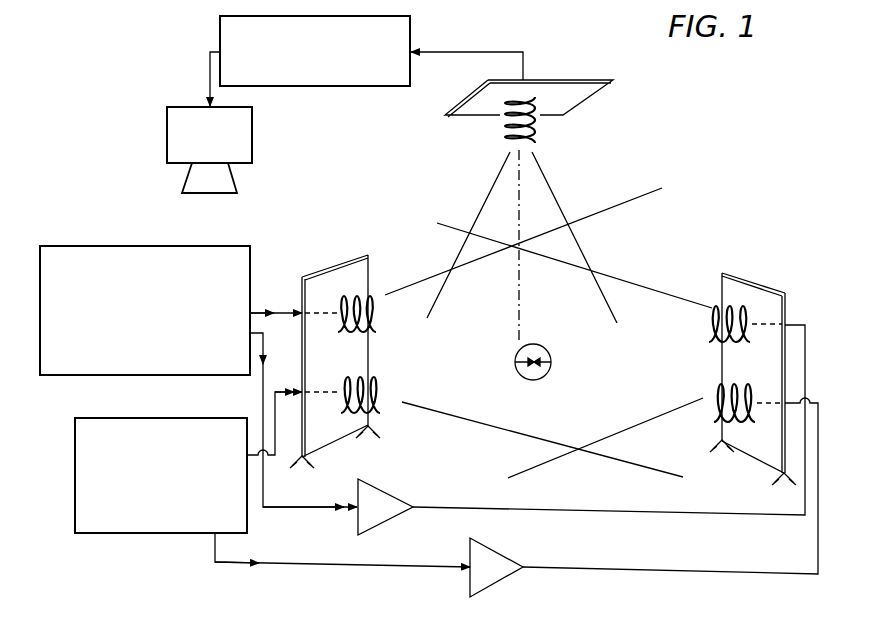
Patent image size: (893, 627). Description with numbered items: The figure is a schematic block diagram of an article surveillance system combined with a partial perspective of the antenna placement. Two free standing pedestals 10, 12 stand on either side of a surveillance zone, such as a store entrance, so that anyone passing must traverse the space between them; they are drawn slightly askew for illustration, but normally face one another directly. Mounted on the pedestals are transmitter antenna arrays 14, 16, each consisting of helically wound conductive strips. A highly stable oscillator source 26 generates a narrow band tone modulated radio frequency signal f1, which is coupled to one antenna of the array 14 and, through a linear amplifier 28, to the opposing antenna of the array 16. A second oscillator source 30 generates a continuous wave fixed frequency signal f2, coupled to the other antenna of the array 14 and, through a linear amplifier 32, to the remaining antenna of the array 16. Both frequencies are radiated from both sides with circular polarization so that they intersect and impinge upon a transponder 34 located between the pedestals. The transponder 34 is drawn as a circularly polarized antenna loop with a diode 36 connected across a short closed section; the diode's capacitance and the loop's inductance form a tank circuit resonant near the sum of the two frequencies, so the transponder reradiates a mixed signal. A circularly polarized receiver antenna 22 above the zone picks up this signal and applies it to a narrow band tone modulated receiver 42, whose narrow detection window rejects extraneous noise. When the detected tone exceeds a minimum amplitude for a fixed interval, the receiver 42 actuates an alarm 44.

The pedestal 10 is at (379, 365).
The pedestal 12 is at (709, 384).
The transmitter antenna array 14 is at (390, 323).
The transmitter antenna array 16 is at (711, 384).
The receiver antenna 22 is at (543, 132).
The oscillator source 26 is at (250, 265).
The linear amplifier 28 is at (390, 520).
The oscillator source 30 is at (145, 535).
The linear amplifier 32 is at (488, 585).
The transponder 34 is at (550, 363).
The diode 36 is at (541, 374).
The narrow band tone modulated receiver 42 is at (313, 86).
The alarm 44 is at (252, 145).